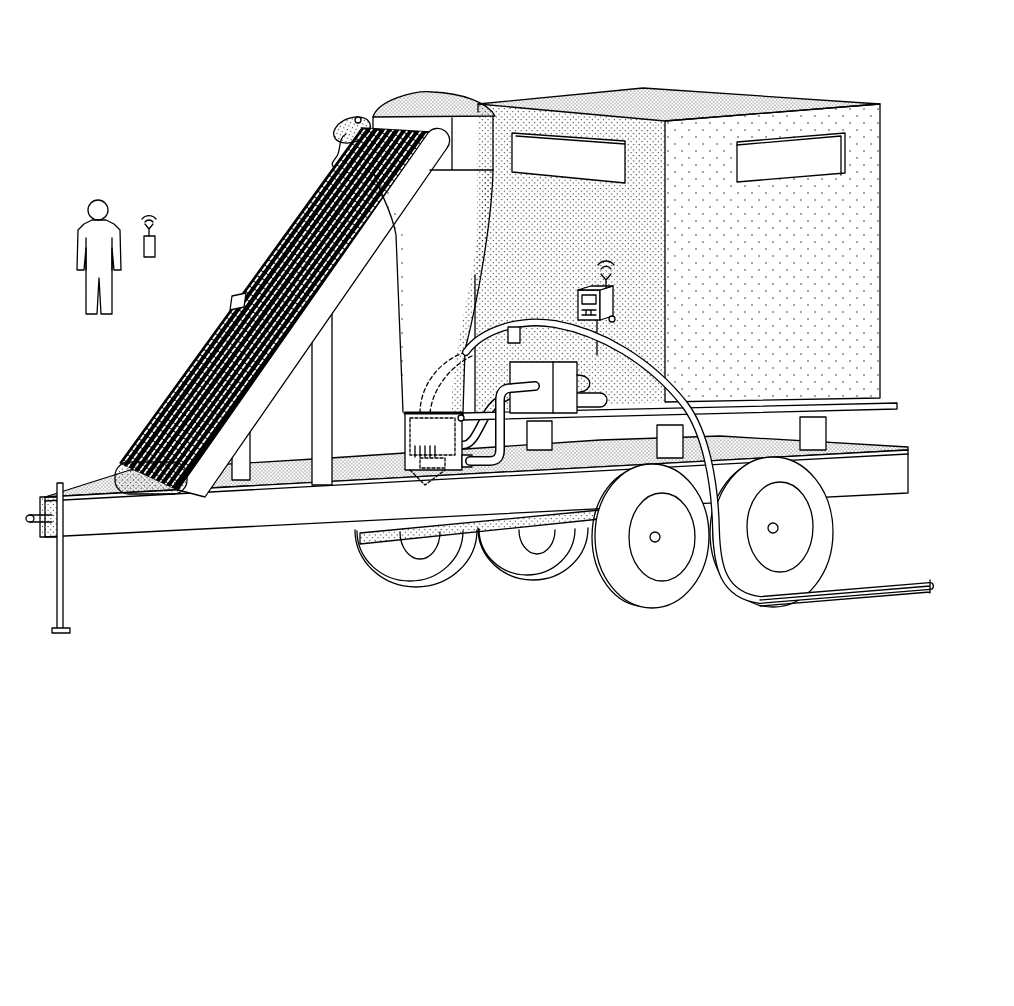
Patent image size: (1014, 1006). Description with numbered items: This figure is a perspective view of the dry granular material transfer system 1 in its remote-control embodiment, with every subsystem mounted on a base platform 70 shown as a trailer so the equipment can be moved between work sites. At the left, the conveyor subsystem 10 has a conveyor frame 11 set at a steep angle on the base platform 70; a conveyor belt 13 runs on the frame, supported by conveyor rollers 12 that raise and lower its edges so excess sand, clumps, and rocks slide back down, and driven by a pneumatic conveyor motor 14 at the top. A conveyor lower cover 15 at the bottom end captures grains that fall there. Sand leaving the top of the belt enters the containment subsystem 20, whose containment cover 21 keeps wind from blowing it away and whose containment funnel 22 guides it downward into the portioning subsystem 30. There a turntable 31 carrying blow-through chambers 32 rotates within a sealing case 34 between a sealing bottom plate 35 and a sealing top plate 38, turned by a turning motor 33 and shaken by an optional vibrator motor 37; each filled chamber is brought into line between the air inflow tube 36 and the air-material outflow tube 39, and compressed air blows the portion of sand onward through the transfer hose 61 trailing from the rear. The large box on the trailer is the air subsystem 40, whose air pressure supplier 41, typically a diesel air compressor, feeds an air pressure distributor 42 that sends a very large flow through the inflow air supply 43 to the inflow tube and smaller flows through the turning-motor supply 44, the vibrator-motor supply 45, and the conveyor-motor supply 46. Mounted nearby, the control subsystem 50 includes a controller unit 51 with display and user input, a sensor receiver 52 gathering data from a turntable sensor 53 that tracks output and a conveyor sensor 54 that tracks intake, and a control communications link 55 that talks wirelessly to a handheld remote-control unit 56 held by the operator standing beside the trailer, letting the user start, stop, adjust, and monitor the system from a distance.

The dry granular material transfer system 1 is at (166, 43).
The conveyor subsystem 10 is at (238, 160).
The conveyor frame 11 is at (256, 417).
The conveyor rollers 12 is at (262, 386).
The conveyor belt 13 is at (304, 215).
The conveyor motor 14 is at (340, 128).
The conveyor lower cover 15 is at (118, 469).
The containment subsystem 20 is at (430, 70).
The containment cover 21 is at (440, 104).
The containment funnel 22 is at (398, 298).
The portioning subsystem 30 is at (386, 362).
The turntable 31 is at (403, 424).
The blow-through chambers 32 is at (434, 408).
The turning motor 33 is at (456, 486).
The sealing case 34 is at (405, 413).
The sealing bottom plate 35 is at (405, 443).
The air inflow tube 36 is at (468, 469).
The vibrator motor 37 is at (420, 479).
The sealing top plate 38 is at (412, 408).
The air-material outflow tube 39 is at (503, 346).
The air subsystem 40 is at (598, 57).
The air pressure supplier 41 is at (738, 100).
The air pressure distributor 42 is at (548, 360).
The inflow air supply 43 is at (500, 455).
The turning-motor supply 44 is at (547, 382).
The vibrator-motor supply 45 is at (528, 383).
The conveyor-motor supply 46 is at (332, 150).
The control subsystem 50 is at (603, 272).
The controller unit 51 is at (578, 290).
The sensor receiver 52 is at (616, 319).
The turntable sensor 53 is at (463, 416).
The conveyor sensor 54 is at (358, 117).
The control communications link 55 is at (616, 273).
The remote-control unit 56 is at (156, 244).
The transfer hose 61 is at (856, 590).
The base platform 70 is at (132, 566).